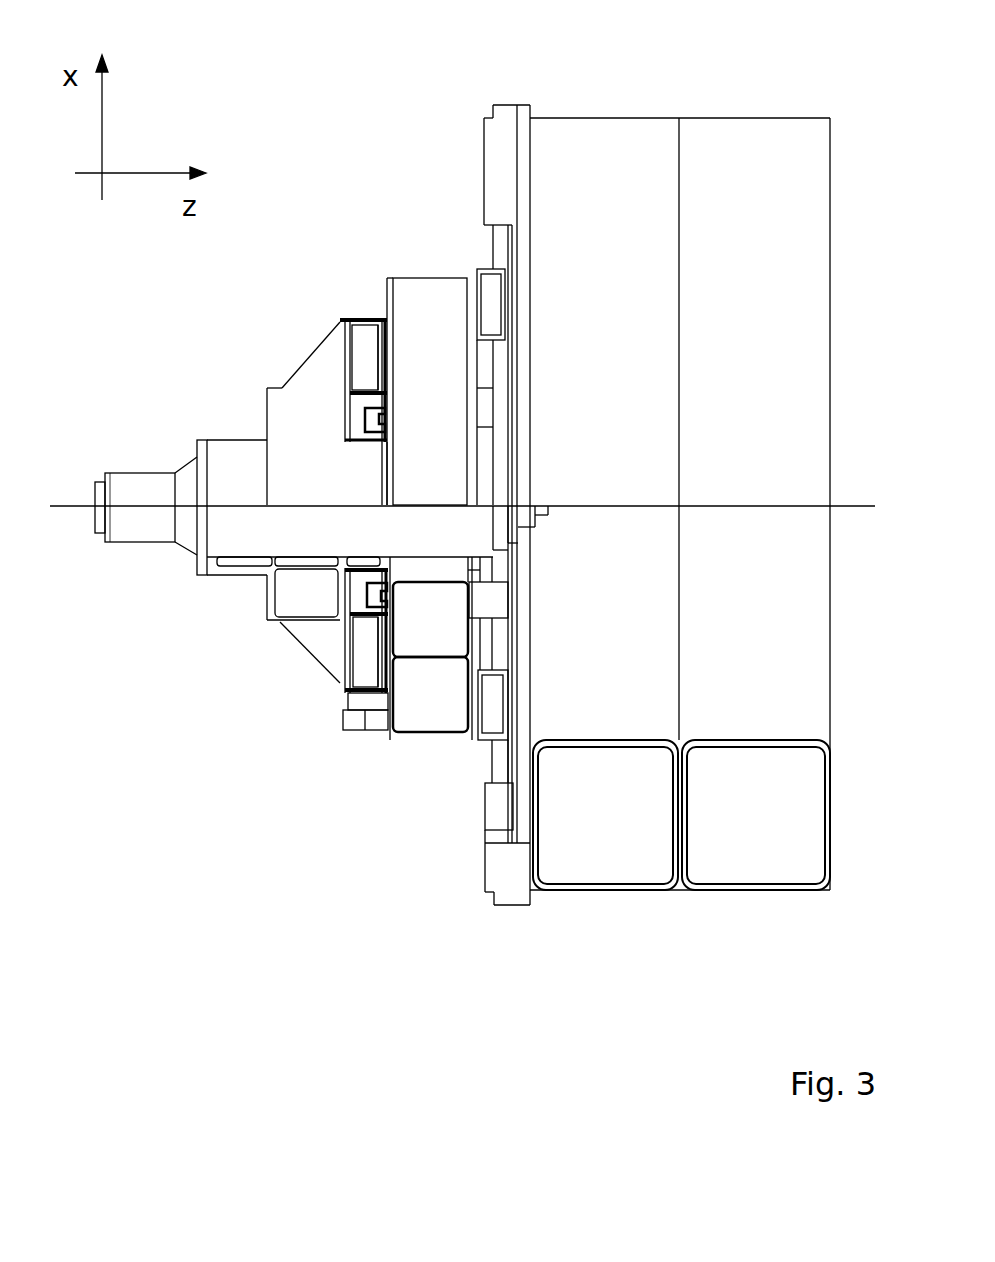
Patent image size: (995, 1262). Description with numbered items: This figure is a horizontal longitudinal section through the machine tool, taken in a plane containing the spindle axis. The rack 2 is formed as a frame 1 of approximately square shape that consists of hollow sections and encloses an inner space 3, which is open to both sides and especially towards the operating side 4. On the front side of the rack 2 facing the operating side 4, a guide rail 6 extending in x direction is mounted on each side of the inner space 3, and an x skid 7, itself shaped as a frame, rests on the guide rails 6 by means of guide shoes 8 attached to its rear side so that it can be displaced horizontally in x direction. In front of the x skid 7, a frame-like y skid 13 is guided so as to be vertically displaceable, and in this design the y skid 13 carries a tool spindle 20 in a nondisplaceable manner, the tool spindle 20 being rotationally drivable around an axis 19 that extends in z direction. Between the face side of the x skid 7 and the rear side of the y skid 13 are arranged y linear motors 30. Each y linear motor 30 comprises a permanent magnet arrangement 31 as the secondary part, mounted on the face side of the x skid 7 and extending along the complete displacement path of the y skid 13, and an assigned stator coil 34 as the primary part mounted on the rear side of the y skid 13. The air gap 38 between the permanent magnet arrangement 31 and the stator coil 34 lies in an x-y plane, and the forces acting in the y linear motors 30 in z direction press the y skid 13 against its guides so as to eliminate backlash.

The frame 1 is at (560, 118).
The rack 2 is at (681, 108).
The inner space 3 is at (786, 639).
The operating side 4 is at (111, 423).
The guide rail 6 is at (495, 248).
The x skid 7 is at (443, 330).
The guide shoe 8 is at (495, 300).
The y skid 13 is at (322, 342).
The axis 19 is at (234, 502).
The tool spindle 20 is at (182, 528).
The y linear motor 30 is at (378, 303).
The permanent magnet arrangement 31 is at (381, 324).
The stator coil 34 is at (365, 370).
The air gap 38 is at (380, 355).